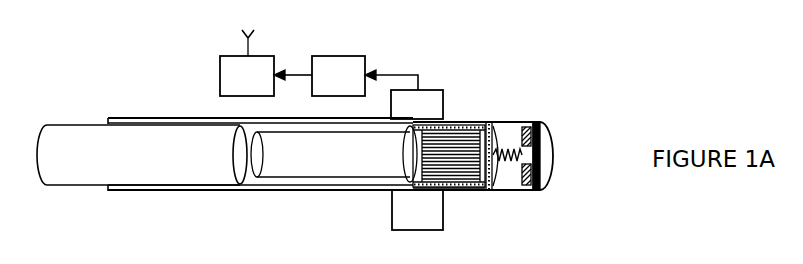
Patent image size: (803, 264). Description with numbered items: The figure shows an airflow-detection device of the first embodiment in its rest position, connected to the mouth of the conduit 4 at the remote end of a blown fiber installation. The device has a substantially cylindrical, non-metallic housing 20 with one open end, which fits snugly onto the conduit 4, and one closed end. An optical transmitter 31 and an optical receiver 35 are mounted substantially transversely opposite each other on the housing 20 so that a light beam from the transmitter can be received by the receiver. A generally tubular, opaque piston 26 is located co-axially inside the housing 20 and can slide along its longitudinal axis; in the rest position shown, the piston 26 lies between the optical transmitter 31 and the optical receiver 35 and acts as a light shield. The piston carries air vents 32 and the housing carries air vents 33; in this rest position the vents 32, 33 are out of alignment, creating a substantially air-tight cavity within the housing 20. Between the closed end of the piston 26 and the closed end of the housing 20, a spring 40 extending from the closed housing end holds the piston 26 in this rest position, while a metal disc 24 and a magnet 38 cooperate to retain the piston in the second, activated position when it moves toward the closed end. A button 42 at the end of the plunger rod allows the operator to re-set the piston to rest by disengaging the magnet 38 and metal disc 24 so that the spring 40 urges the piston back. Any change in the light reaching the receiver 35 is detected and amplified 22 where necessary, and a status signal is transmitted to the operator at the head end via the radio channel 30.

The conduit 4 is at (77, 185).
The housing 20 is at (263, 190).
The amplifier 22 is at (319, 76).
The radio channel 30 is at (247, 63).
The optical receiver 35 is at (404, 95).
The optical transmitter 31 is at (417, 210).
The piston 26 is at (462, 143).
The metal disc 24 is at (490, 127).
The air vents of the piston 32 is at (457, 190).
The air vents of the housing 33 is at (500, 192).
The magnet 38 is at (528, 125).
The spring 40 is at (508, 175).
The button 42 is at (557, 170).